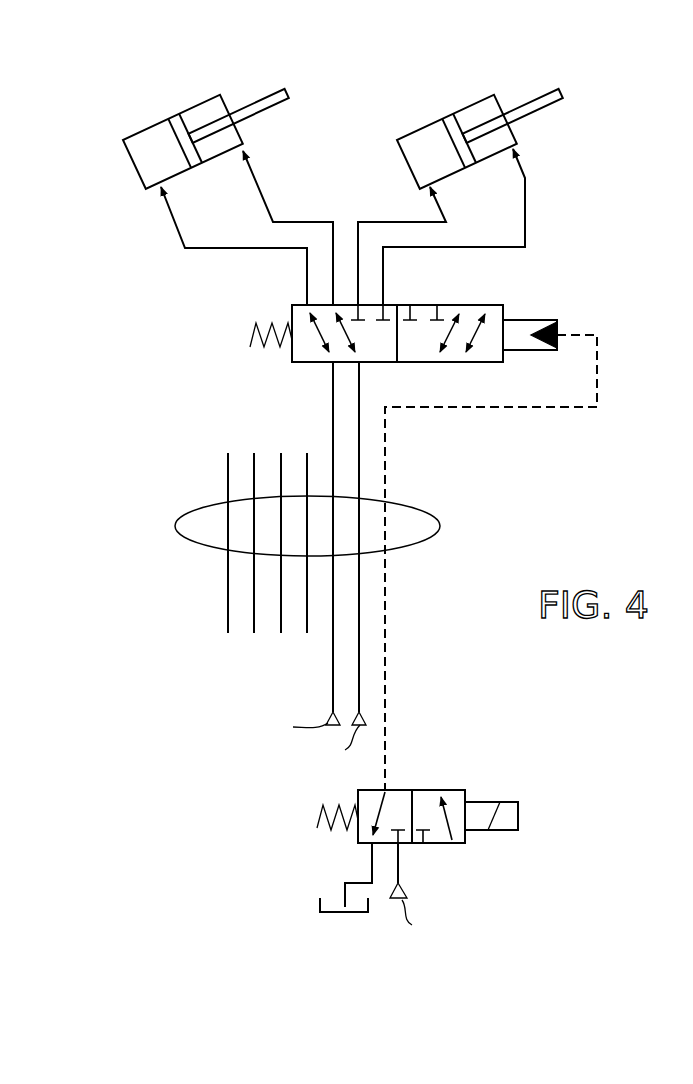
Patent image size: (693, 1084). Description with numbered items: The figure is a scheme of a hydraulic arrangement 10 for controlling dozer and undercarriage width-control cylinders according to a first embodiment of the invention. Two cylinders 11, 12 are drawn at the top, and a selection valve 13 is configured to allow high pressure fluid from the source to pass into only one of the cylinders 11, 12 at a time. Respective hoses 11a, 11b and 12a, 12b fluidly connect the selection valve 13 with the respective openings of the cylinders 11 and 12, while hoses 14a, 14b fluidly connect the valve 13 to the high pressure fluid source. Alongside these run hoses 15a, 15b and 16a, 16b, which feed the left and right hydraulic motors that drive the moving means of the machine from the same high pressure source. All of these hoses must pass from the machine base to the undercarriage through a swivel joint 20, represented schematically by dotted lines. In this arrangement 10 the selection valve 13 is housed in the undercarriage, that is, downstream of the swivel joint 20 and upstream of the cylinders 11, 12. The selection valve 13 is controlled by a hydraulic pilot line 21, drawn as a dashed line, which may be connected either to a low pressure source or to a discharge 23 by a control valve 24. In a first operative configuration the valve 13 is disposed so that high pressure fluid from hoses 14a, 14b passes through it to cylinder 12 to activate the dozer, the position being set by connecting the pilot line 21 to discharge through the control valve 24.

The hydraulic arrangement 10 is at (575, 214).
The cylinder 11 is at (463, 108).
The cylinder 12 is at (190, 108).
The hose 11a is at (368, 222).
The hose 11b is at (525, 210).
The hose 12a is at (224, 250).
The hose 12b is at (314, 222).
The selection valve 13 is at (503, 308).
The hose 14a is at (333, 613).
The hose 14b is at (360, 638).
The hose 15a is at (281, 613).
The hose 15b is at (307, 613).
The hose 16a is at (228, 565).
The hose 16b is at (255, 595).
The swivel joint 20 is at (405, 522).
The hydraulic pilot line 21 is at (463, 408).
The discharge 23 is at (330, 912).
The control valve 24 is at (447, 778).